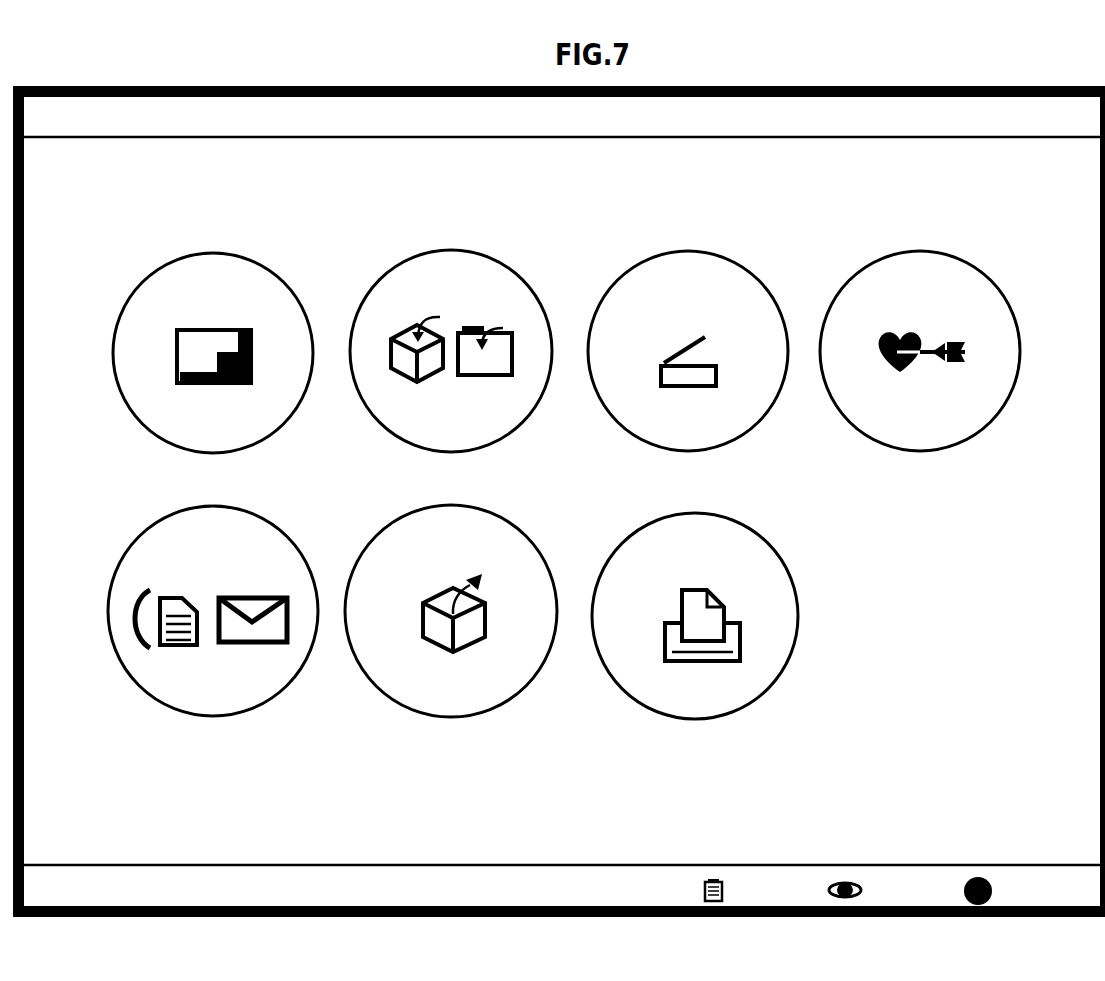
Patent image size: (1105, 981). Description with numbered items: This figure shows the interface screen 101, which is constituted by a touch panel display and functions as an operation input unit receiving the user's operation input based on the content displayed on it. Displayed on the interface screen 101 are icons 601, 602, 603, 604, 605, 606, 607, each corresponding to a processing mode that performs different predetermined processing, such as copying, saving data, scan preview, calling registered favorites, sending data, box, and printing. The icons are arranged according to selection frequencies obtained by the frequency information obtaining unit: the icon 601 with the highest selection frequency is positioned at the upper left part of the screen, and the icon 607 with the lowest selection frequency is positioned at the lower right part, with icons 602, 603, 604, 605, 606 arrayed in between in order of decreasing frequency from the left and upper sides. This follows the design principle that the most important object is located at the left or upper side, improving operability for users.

The interface screen 101 is at (1022, 87).
The icon 601 is at (296, 292).
The icon 602 is at (538, 292).
The icon 603 is at (774, 292).
The icon 604 is at (1006, 292).
The icon 605 is at (296, 543).
The icon 606 is at (538, 543).
The icon 607 is at (770, 538).